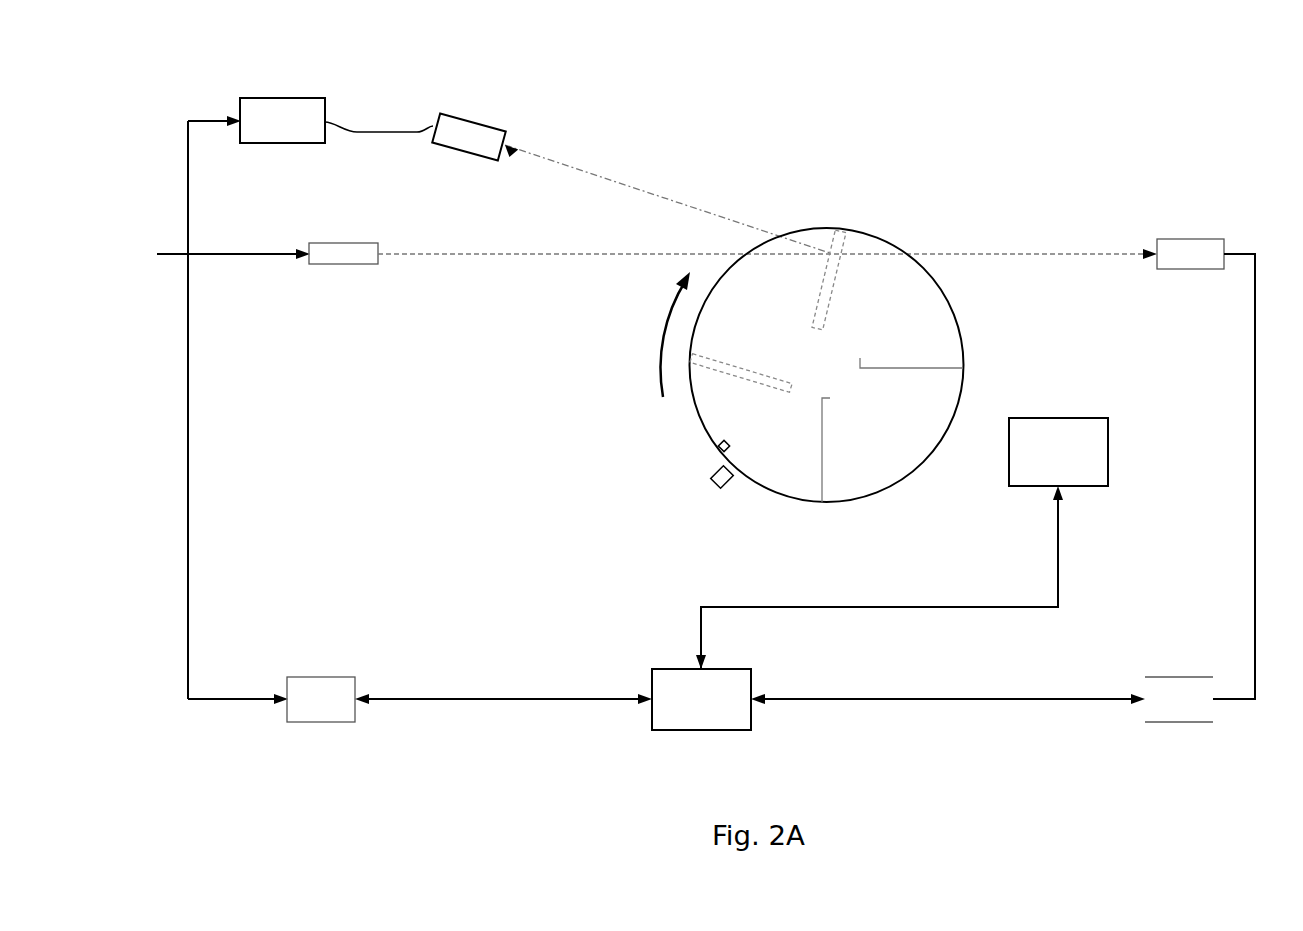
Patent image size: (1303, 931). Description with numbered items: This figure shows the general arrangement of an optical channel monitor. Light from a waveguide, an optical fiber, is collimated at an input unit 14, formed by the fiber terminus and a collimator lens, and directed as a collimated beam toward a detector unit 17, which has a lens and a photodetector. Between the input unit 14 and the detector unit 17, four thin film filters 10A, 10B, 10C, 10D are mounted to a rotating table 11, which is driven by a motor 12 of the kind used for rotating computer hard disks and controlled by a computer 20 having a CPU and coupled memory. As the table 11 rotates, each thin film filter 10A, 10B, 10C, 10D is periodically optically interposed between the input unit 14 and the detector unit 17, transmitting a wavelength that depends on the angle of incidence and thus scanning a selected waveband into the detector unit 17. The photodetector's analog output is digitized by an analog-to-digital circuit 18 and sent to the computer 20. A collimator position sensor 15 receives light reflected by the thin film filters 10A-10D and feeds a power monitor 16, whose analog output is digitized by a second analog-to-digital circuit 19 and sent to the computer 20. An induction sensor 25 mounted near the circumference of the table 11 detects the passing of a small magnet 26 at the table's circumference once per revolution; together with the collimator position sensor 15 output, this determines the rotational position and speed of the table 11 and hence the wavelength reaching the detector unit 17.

The thin film filter 10A is at (837, 230).
The thin film filter 10B is at (730, 369).
The thin film filter 10C is at (833, 480).
The thin film filter 10D is at (963, 368).
The rotating table 11 is at (947, 318).
The motor 12 is at (1088, 420).
The input unit 14 is at (360, 243).
The collimator position sensor 15 is at (483, 129).
The power monitor 16 is at (252, 104).
The detector unit 17 is at (1207, 240).
The analog-to-digital circuit 18 is at (1193, 677).
The second analog-to-digital circuit 19 is at (318, 682).
The computer 20 is at (659, 722).
The induction sensor 25 is at (717, 485).
The magnet 26 is at (724, 441).